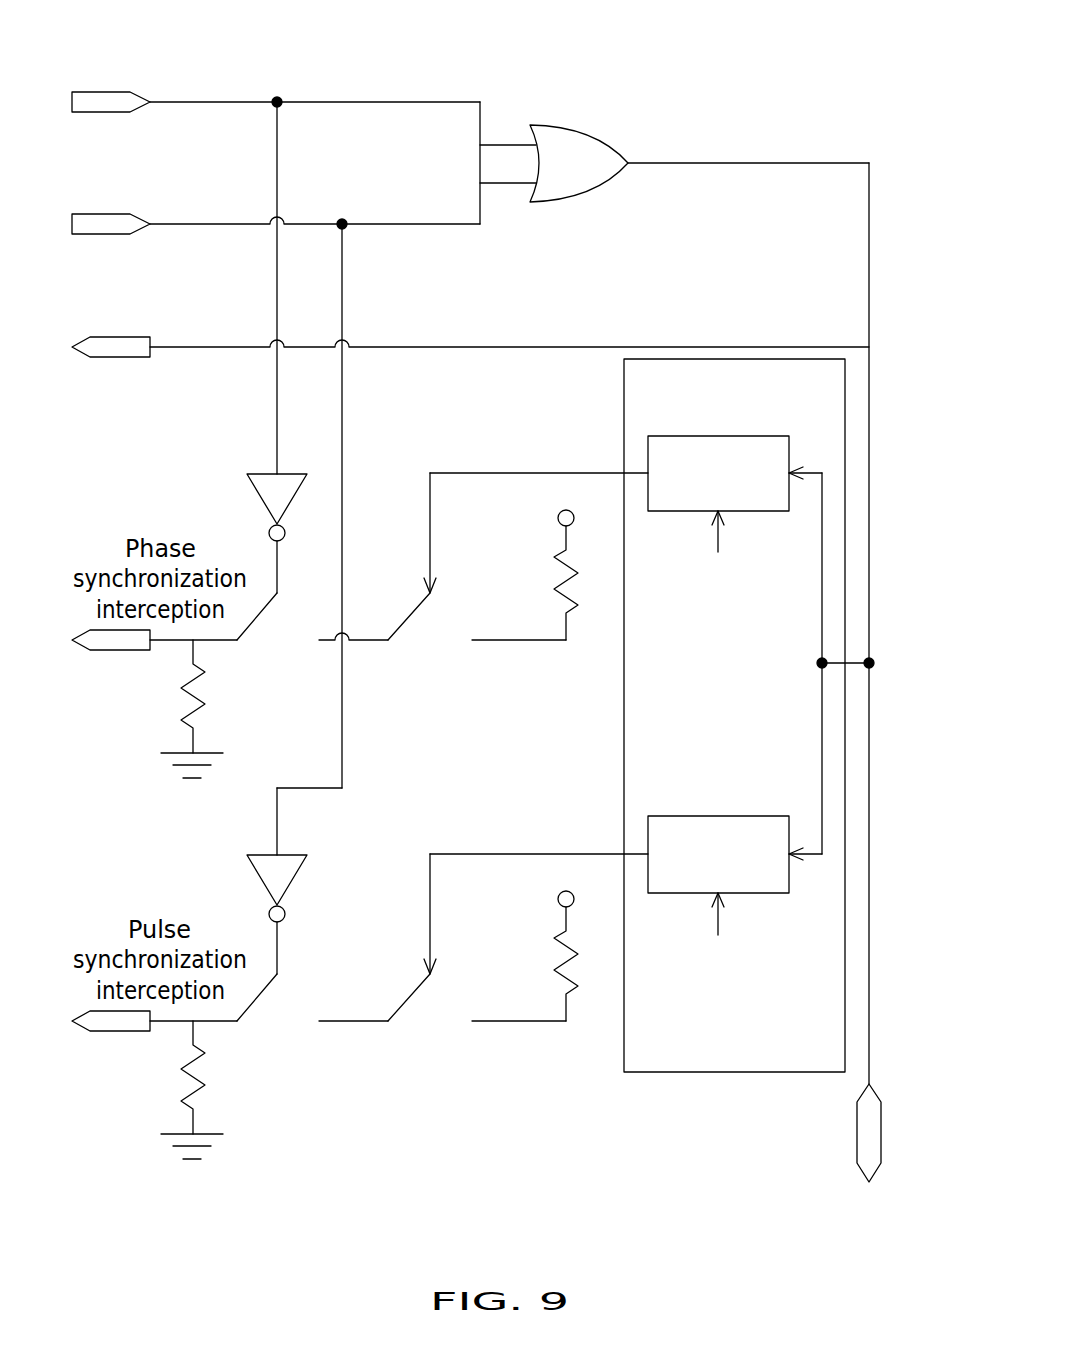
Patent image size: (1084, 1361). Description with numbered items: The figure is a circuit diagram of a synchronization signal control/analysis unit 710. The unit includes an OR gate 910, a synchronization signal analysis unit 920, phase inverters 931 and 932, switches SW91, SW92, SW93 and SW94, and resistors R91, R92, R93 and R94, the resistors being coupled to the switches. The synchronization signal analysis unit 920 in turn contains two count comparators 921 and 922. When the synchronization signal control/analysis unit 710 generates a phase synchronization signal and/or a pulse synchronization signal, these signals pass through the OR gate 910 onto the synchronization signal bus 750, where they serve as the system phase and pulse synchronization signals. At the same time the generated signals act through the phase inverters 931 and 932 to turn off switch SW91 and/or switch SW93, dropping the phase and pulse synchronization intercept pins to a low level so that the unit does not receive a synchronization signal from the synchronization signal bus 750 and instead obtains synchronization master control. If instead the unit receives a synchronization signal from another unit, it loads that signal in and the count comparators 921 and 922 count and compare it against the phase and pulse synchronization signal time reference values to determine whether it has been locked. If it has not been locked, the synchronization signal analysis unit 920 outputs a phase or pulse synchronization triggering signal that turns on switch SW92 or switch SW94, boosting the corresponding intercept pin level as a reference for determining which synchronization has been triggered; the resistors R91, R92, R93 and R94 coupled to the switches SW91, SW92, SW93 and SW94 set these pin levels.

The synchronization signal control/analysis unit 710 is at (934, 40).
The synchronization signal bus 750 is at (869, 217).
The OR gate 910 is at (583, 133).
The synchronization signal analysis unit 920 is at (748, 1072).
The count comparator 921 is at (789, 459).
The count comparator 922 is at (731, 816).
The phase inverter 931 is at (262, 503).
The phase inverter 932 is at (262, 884).
The resistor R91 is at (174, 709).
The resistor R92 is at (542, 559).
The resistor R93 is at (174, 1090).
The resistor R94 is at (542, 940).
The switch SW91 is at (231, 633).
The switch SW92 is at (442, 633).
The switch SW93 is at (230, 1016).
The switch SW94 is at (442, 1016).